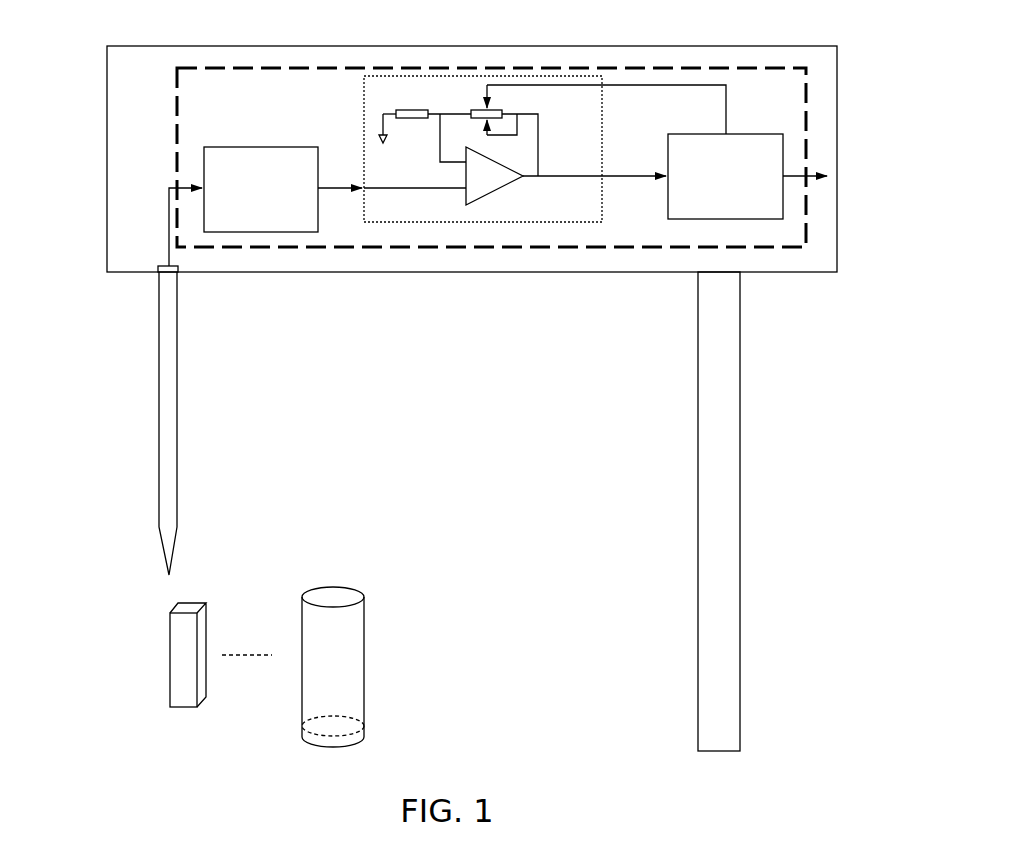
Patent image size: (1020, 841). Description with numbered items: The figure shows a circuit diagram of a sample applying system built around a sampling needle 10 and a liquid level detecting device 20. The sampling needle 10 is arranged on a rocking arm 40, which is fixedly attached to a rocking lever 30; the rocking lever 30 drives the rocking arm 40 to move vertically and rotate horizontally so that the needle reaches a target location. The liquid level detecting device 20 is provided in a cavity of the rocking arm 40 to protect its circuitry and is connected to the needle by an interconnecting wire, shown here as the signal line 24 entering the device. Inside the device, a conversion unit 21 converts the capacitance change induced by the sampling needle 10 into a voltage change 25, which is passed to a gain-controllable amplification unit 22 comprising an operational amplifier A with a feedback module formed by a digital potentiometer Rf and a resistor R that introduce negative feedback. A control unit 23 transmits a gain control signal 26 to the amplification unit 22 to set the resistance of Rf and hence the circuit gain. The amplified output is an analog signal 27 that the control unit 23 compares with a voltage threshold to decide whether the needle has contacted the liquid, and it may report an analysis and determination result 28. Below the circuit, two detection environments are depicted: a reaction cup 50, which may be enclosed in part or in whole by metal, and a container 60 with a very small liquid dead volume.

The sampling needle 10 is at (152, 418).
The liquid level detecting device 20 is at (388, 249).
The conversion unit 21 is at (262, 234).
The amplification unit 22 is at (473, 224).
The control unit 23 is at (755, 221).
The detection signal line 24 is at (155, 210).
The voltage change 25 is at (345, 173).
The gain control signal 26 is at (645, 80).
The analog signal 27 is at (625, 180).
The analysis and determination result 28 is at (800, 161).
The rocking lever 30 is at (752, 454).
The rocking arm 40 is at (567, 275).
The reaction cup 50 is at (156, 676).
The container 60 is at (387, 661).